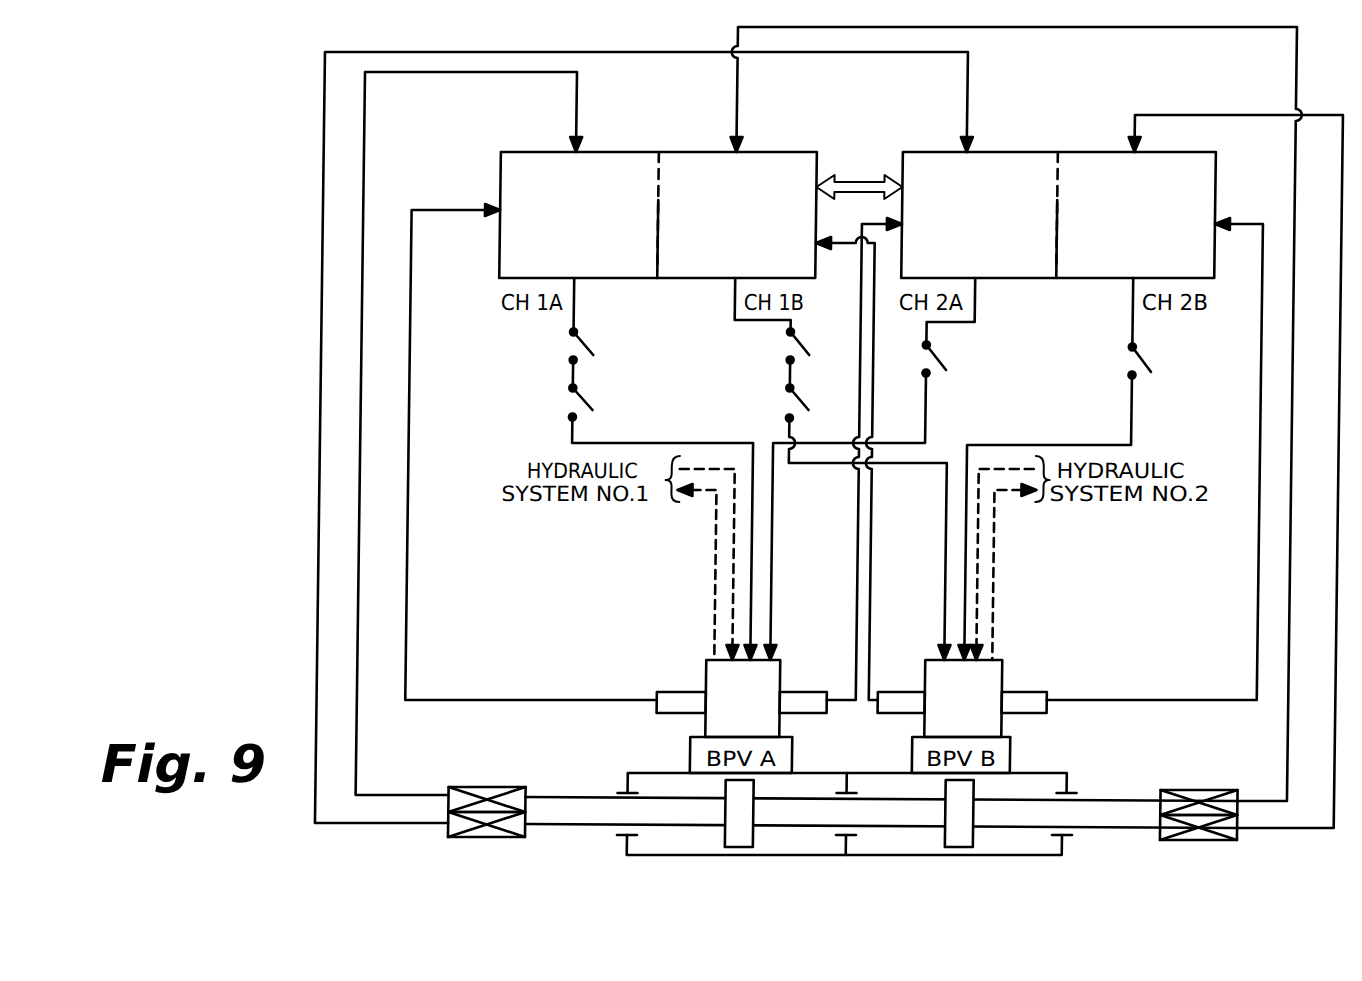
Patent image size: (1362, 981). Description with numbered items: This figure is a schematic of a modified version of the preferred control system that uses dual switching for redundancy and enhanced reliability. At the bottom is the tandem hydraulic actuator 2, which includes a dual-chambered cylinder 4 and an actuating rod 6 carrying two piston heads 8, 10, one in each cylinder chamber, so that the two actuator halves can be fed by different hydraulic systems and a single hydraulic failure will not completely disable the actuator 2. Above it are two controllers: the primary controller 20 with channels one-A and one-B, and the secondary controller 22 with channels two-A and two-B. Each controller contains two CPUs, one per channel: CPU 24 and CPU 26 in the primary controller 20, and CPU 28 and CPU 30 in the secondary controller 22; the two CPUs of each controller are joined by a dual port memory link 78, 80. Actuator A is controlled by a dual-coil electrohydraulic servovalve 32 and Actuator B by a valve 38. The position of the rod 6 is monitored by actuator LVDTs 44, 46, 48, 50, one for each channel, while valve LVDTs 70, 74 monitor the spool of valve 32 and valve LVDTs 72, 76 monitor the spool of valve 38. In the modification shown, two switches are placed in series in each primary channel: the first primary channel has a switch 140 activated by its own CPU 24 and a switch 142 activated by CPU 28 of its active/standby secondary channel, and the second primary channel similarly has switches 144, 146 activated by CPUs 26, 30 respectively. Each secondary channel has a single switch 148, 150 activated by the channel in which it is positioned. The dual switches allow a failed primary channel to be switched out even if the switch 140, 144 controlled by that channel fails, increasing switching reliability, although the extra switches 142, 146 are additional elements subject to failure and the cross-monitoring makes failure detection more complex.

The tandem hydraulic actuator 2 is at (824, 860).
The dual-chambered cylinder 4 is at (1012, 860).
The actuating rod 6 is at (1110, 800).
The piston head 8 is at (760, 796).
The piston head 10 is at (950, 793).
The primary controller 20 is at (655, 104).
The secondary controller 22 is at (1082, 96).
The CPU 24 is at (545, 185).
The CPU 26 is at (715, 185).
The CPU 28 is at (949, 185).
The CPU 30 is at (1112, 185).
The valve 32 is at (709, 722).
The valve 38 is at (1006, 722).
The actuator monitoring device 44 is at (453, 790).
The actuator monitoring device 46 is at (1240, 790).
The actuator monitoring device 48 is at (453, 833).
The actuator monitoring device 50 is at (1242, 835).
The valve monitoring device 70 is at (660, 700).
The valve monitoring device 72 is at (908, 715).
The valve monitoring device 74 is at (797, 715).
The valve monitoring device 76 is at (1052, 692).
The dual port memory link 78 is at (655, 248).
The dual port memory link 80 is at (1054, 240).
The switch 140 is at (580, 335).
The switch 142 is at (580, 395).
The switch 144 is at (800, 332).
The switch 146 is at (795, 402).
The switch 148 is at (930, 378).
The switch 150 is at (1140, 378).